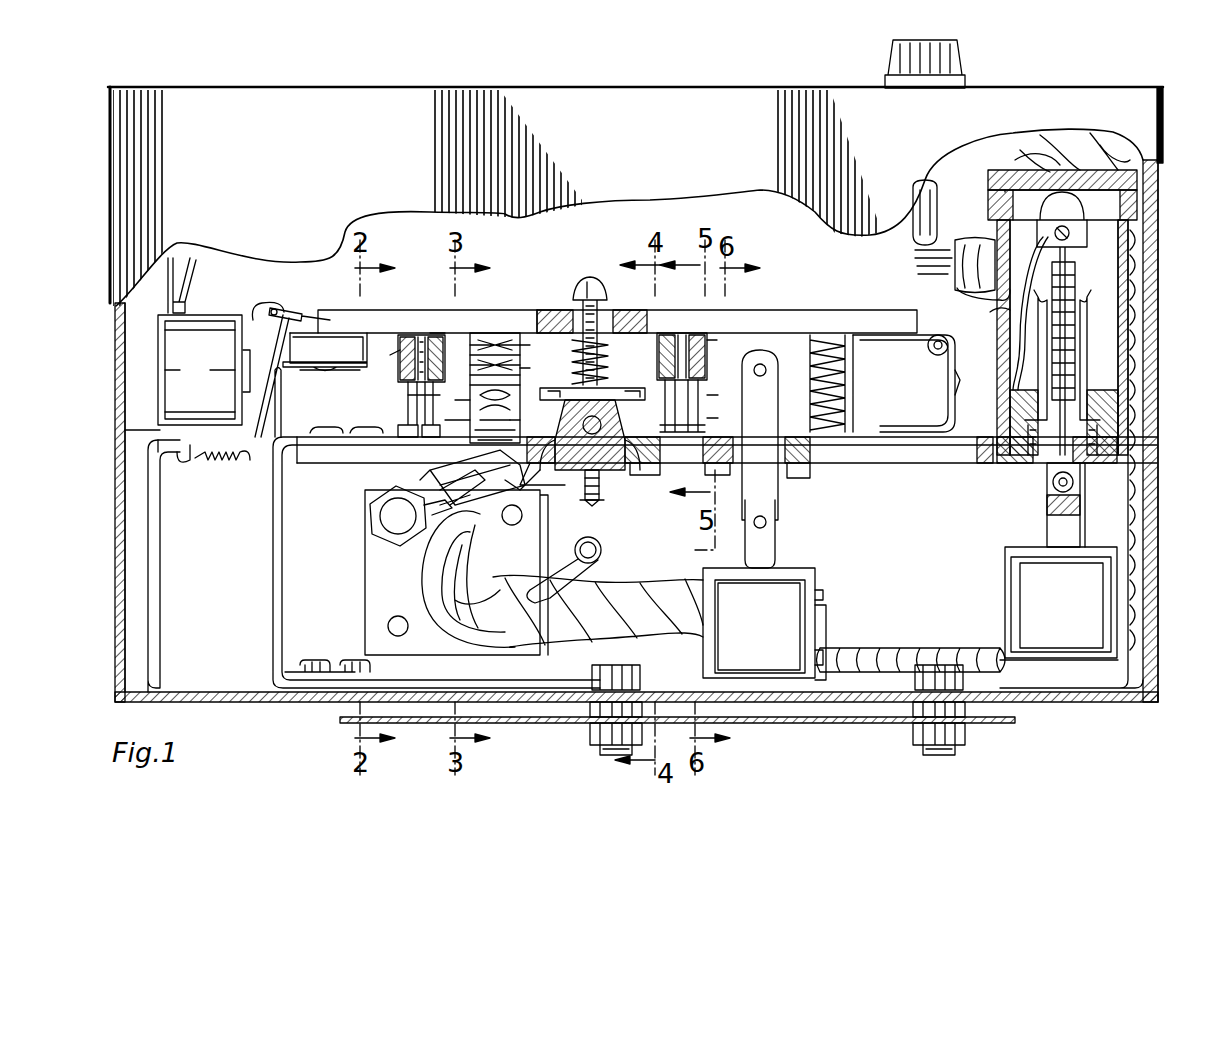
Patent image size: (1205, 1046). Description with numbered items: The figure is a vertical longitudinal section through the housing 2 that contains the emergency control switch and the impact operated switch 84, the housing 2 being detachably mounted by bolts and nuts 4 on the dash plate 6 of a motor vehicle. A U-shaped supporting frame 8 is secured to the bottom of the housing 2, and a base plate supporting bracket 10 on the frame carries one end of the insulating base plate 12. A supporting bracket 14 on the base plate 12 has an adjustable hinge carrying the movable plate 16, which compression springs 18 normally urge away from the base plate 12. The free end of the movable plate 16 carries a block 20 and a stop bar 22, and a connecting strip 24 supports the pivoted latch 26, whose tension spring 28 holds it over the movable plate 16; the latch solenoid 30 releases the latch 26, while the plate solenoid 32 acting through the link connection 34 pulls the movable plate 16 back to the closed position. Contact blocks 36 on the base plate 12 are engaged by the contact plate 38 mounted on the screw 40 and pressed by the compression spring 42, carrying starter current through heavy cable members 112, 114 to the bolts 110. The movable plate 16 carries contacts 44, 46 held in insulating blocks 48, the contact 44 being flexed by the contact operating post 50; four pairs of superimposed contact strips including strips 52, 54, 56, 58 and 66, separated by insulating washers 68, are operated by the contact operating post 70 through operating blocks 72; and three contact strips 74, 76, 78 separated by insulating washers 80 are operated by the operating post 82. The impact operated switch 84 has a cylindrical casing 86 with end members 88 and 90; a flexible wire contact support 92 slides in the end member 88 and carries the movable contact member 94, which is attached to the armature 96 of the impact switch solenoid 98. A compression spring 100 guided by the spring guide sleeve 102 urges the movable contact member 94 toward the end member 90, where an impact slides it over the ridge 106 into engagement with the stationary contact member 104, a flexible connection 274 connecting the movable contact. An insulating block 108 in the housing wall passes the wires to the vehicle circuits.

The housing 2 is at (123, 553).
The bolts and nuts 4 is at (590, 740).
The dash plate 6 is at (845, 723).
The supporting frame 8 is at (148, 598).
The base plate supporting bracket 10 is at (273, 584).
The base plate 12 is at (880, 410).
The supporting bracket 14 is at (955, 380).
The movable plate 16 is at (852, 310).
The compression springs 18 is at (855, 388).
The block 20 is at (330, 333).
The stop bar 22 is at (289, 375).
The connecting strip 24 is at (125, 427).
The pivoted latch 26 is at (270, 306).
The tension spring 28 is at (220, 470).
The latch solenoid 30 is at (232, 283).
The plate solenoid 32 is at (783, 590).
The link connection 34 is at (778, 492).
The contact blocks 36 is at (640, 495).
The contact plate 38 is at (612, 410).
The screw 40 is at (575, 288).
The compression spring 42 is at (612, 357).
The contact 44 is at (330, 367).
The contact 46 is at (398, 352).
The contact operating post 50 is at (412, 395).
The insulating blocks 48 is at (398, 335).
The contact strip 52 is at (520, 333).
The contact strip 54 is at (520, 350).
The contact strip 56 is at (520, 372).
The contact strip 58 is at (445, 333).
The contact strip 66 is at (508, 402).
The insulating washers 68 is at (468, 333).
The contact operating post 70 is at (470, 415).
The operating blocks 72 is at (470, 395).
The contact strip 74 is at (660, 333).
The contact strip 76 is at (710, 333).
The contact strip 78 is at (645, 388).
The insulating washers 80 is at (707, 380).
The operating post 82 is at (715, 414).
The impact operated switch 84 is at (1137, 228).
The cylindrical casing 86 is at (1000, 340).
The end member 88 is at (1135, 385).
The end member 90 is at (1012, 175).
The flexible wire contact support 92 is at (1087, 340).
The movable contact member 94 is at (1062, 190).
The armature 96 is at (1047, 522).
The impact switch solenoid 98 is at (1030, 598).
The compression spring 100 is at (1080, 262).
The spring guide sleeve 102 is at (1115, 300).
The stationary contact member 104 is at (1000, 180).
The ridge 106 is at (1000, 207).
The insulating block 108 is at (365, 582).
The bolts 110 is at (372, 503).
The cable member 112 is at (540, 490).
The cable member 114 is at (596, 560).
The flexible connection 274 is at (1010, 312).